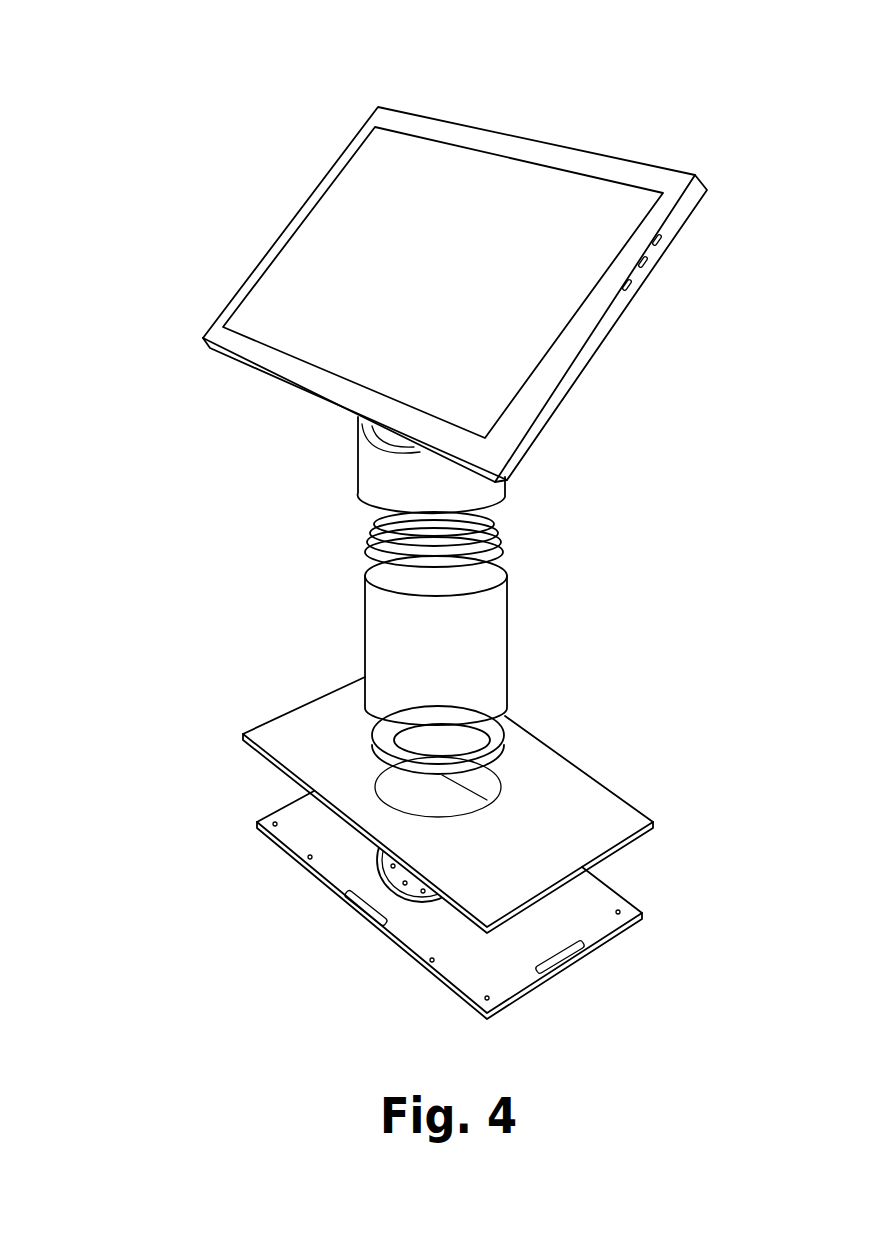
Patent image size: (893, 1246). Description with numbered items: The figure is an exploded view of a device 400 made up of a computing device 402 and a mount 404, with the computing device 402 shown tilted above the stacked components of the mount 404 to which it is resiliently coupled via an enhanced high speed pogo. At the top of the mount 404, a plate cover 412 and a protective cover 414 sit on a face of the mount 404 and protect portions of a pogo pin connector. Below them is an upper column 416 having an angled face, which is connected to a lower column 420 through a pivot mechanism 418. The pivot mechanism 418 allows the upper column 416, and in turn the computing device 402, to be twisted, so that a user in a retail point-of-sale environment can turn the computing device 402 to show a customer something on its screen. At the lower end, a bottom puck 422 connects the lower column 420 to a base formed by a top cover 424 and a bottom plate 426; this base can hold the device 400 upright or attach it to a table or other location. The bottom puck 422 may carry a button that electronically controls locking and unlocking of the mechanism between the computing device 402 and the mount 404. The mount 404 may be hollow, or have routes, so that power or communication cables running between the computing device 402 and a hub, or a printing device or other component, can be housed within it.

The device 400 is at (672, 74).
The computing device 402 is at (612, 322).
The mount 404 is at (132, 413).
The plate cover 412 is at (357, 421).
The protective cover 414 is at (360, 447).
The upper column 416 is at (375, 482).
The pivot mechanism 418 is at (370, 530).
The lower column 420 is at (377, 630).
The bottom puck 422 is at (368, 738).
The top cover 424 is at (312, 753).
The bottom plate 426 is at (312, 840).